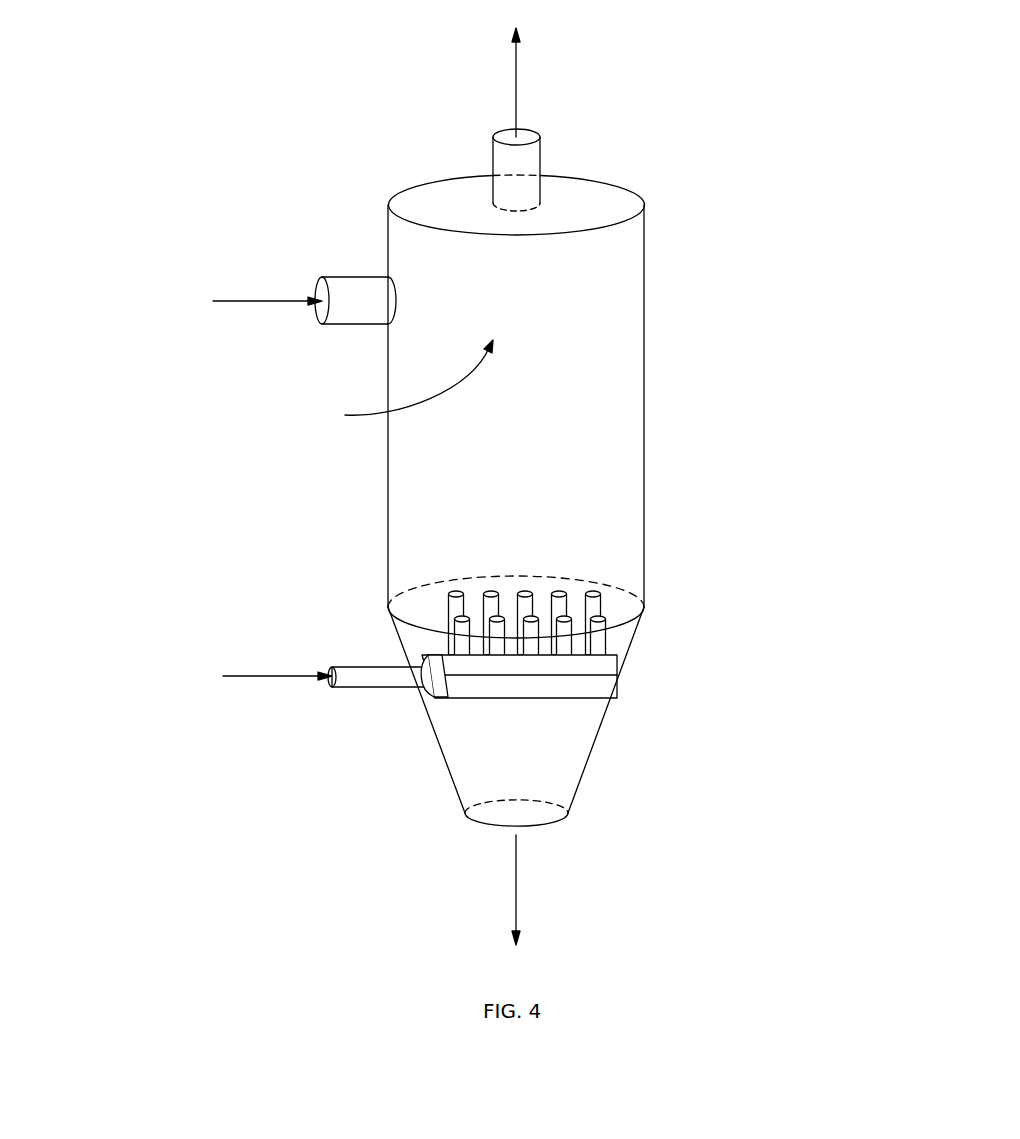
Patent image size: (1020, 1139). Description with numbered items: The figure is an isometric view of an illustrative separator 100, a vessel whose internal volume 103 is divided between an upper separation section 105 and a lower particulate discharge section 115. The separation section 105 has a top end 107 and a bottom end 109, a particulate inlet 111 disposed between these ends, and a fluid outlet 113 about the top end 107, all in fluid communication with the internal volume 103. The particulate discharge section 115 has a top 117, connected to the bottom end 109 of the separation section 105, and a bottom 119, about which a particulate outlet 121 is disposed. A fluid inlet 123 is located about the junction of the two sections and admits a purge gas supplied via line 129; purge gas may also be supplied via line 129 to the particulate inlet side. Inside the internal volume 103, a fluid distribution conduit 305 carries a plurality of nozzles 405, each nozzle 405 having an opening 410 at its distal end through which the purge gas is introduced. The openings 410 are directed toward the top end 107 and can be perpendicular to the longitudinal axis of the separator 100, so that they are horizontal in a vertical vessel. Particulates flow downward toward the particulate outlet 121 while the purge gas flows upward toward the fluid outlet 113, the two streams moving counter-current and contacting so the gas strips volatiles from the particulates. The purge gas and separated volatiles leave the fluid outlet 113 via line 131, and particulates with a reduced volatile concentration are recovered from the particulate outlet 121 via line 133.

The separator 100 is at (285, 50).
The internal volume 103 is at (394, 383).
The separation section 105 is at (645, 338).
The top end 107 is at (427, 180).
The bottom end 109 is at (603, 628).
The particulate inlet 111 is at (350, 277).
The fluid outlet 113 is at (540, 153).
The particulate discharge section 115 is at (588, 760).
The top 117 is at (605, 633).
The bottom 119 is at (550, 825).
The particulate outlet 121 is at (475, 835).
The fluid inlet 123 is at (347, 665).
The line 129 is at (248, 300).
The line 131 is at (516, 77).
The line 133 is at (516, 898).
The fluid distribution conduit 305 is at (612, 663).
The nozzle 405 is at (605, 605).
The opening 410 is at (459, 604).